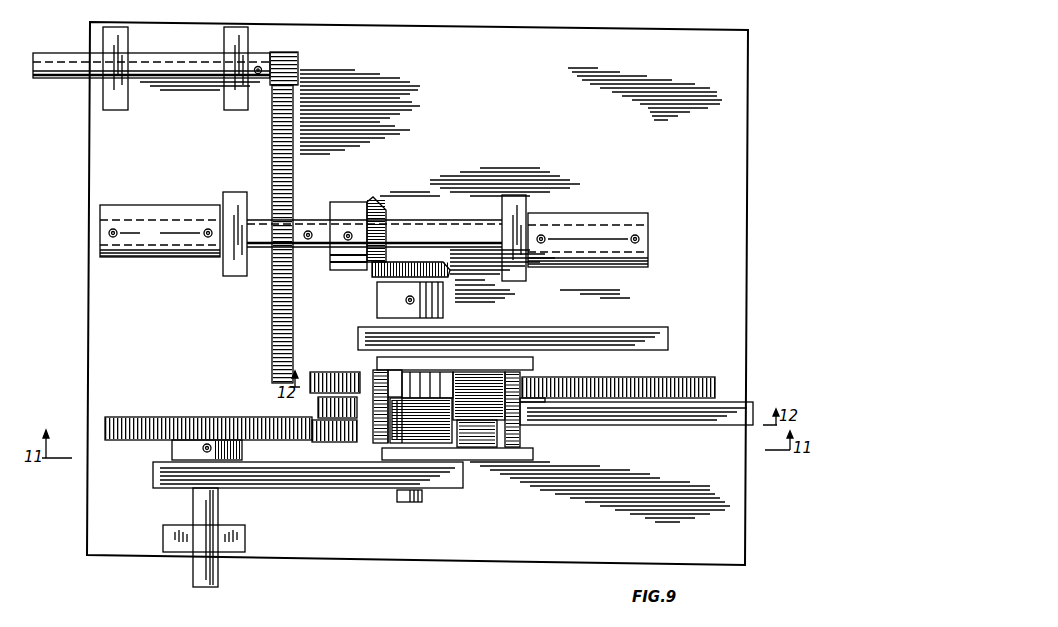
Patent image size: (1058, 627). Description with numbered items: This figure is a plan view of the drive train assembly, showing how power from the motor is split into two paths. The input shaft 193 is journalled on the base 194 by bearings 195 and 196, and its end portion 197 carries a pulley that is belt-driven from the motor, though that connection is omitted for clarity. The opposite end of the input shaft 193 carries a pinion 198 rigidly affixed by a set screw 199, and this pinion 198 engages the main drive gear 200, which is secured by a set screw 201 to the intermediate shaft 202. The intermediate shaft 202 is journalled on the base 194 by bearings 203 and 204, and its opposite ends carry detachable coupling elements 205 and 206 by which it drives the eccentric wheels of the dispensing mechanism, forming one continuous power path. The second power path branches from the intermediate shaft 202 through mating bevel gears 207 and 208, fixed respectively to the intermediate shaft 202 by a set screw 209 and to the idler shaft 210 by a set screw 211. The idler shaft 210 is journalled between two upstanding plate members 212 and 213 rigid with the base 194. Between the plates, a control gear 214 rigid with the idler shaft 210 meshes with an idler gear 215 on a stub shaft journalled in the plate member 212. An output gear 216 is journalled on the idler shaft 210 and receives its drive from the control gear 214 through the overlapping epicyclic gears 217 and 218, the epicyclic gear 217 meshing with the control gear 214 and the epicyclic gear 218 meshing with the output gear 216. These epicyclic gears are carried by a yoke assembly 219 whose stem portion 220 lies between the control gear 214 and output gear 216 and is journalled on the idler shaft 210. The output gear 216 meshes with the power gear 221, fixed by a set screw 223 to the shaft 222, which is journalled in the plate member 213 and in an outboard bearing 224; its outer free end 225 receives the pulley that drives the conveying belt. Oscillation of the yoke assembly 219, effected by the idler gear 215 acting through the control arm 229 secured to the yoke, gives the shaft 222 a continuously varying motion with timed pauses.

The input shaft 193 is at (177, 78).
The base 194 is at (517, 46).
The bearing 195 is at (125, 46).
The bearing 196 is at (235, 46).
The end portion 197 is at (73, 67).
The pinion 198 is at (298, 62).
The set screw 199 is at (257, 80).
The main drive gear 200 is at (292, 157).
The set screw 201 is at (312, 229).
The intermediate shaft 202 is at (258, 250).
The bearing 203 is at (233, 195).
The bearing 204 is at (518, 207).
The detachable coupling element 205 is at (165, 257).
The detachable coupling element 206 is at (616, 215).
The bevel gear 207 is at (358, 210).
The bevel gear 208 is at (425, 263).
The set screw 209 is at (348, 240).
The idler shaft 210 is at (409, 503).
The set screw 211 is at (406, 300).
The plate member 212 is at (556, 338).
The plate member 213 is at (330, 483).
The control gear 214 is at (330, 375).
The idler gear 215 is at (688, 378).
The output gear 216 is at (346, 435).
The epicyclic gear 217 is at (480, 385).
The epicyclic gear 218 is at (470, 430).
The yoke assembly 219 is at (376, 380).
The stem portion 220 is at (318, 407).
The power gear 221 is at (175, 426).
The shaft 222 is at (198, 510).
The set screw 223 is at (207, 440).
The outboard bearing 224 is at (240, 540).
The outer free end 225 is at (218, 580).
The control arm 229 is at (660, 410).